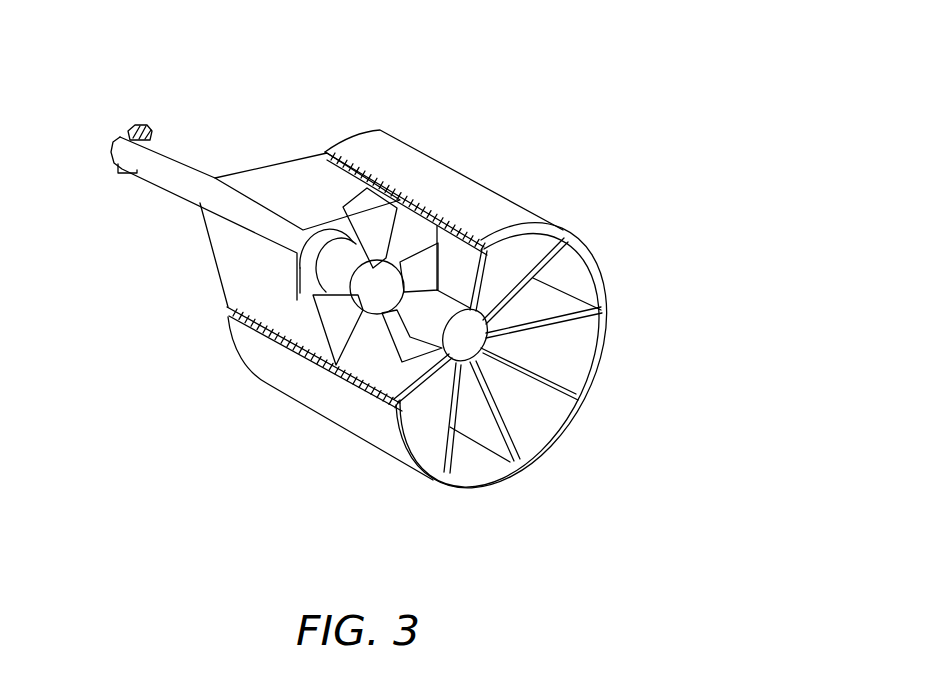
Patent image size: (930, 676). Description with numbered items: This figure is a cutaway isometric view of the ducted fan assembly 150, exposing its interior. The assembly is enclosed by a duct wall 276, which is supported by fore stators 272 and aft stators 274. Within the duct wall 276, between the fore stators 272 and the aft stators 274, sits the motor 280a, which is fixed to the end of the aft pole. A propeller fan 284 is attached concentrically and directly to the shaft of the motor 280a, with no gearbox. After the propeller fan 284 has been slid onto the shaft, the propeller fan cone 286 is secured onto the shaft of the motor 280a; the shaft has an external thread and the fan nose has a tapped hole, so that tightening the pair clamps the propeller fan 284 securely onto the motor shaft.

The ducted fan assembly 150 is at (499, 158).
The fore stators 272 is at (276, 160).
The aft stators 274 is at (540, 380).
The duct wall 276 is at (530, 212).
The motor 280a is at (303, 280).
The propeller fan 284 is at (290, 343).
The propeller fan cone 286 is at (380, 293).